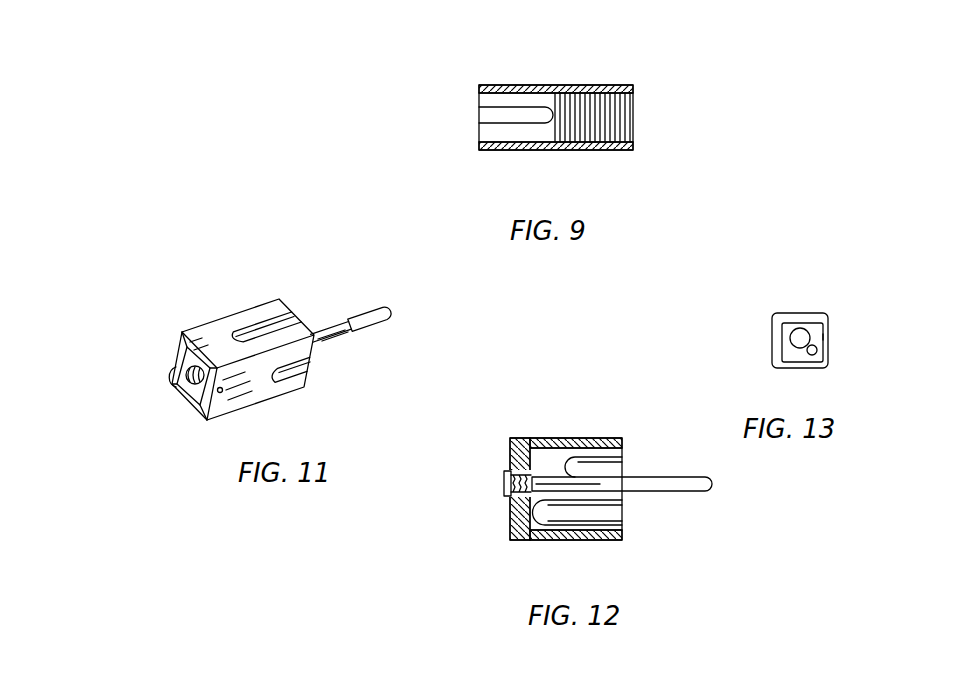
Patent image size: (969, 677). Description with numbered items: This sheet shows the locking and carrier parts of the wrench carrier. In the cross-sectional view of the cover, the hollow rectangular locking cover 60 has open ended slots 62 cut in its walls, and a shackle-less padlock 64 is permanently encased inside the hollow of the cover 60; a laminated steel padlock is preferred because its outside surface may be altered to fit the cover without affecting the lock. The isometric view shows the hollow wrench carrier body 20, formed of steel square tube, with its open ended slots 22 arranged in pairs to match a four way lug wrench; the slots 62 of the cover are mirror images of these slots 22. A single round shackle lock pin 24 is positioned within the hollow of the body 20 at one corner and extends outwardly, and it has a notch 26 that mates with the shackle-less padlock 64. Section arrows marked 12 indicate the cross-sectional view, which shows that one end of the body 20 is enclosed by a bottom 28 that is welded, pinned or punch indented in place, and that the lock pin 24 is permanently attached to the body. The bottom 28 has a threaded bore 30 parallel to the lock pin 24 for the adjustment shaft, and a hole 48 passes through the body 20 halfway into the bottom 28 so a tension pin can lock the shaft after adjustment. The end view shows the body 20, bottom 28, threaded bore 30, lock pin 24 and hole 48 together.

In FIG. 11, the section line indicating FIG. 12 is at (163, 380).
In FIG. 11, the wrench carrier body 20 is at (212, 318).
In FIG. 12, the wrench carrier body 20 is at (533, 438).
In FIG. 13, the wrench carrier body 20 is at (782, 312).
In FIG. 11, the open ended slots 22 is at (280, 281).
In FIG. 12, the open ended slots 22 is at (596, 458).
In FIG. 11, the shackle lock pin 24 is at (172, 375).
In FIG. 12, the shackle lock pin 24 is at (631, 492).
In FIG. 13, the shackle lock pin 24 is at (818, 350).
In FIG. 11, the notch 26 is at (350, 328).
In FIG. 11, the bottom 28 is at (200, 397).
In FIG. 12, the bottom 28 is at (510, 518).
In FIG. 13, the bottom 28 is at (813, 327).
In FIG. 12, the threaded bore 30 is at (506, 490).
In FIG. 13, the threaded bore 30 is at (790, 343).
In FIG. 11, the hole 48 is at (221, 393).
In FIG. 13, the hole 48 is at (825, 336).
In FIG. 9, the locking cover 60 is at (593, 91).
In FIG. 9, the open ended slots 62 is at (493, 103).
In FIG. 9, the shackle-less padlock 64 is at (605, 140).